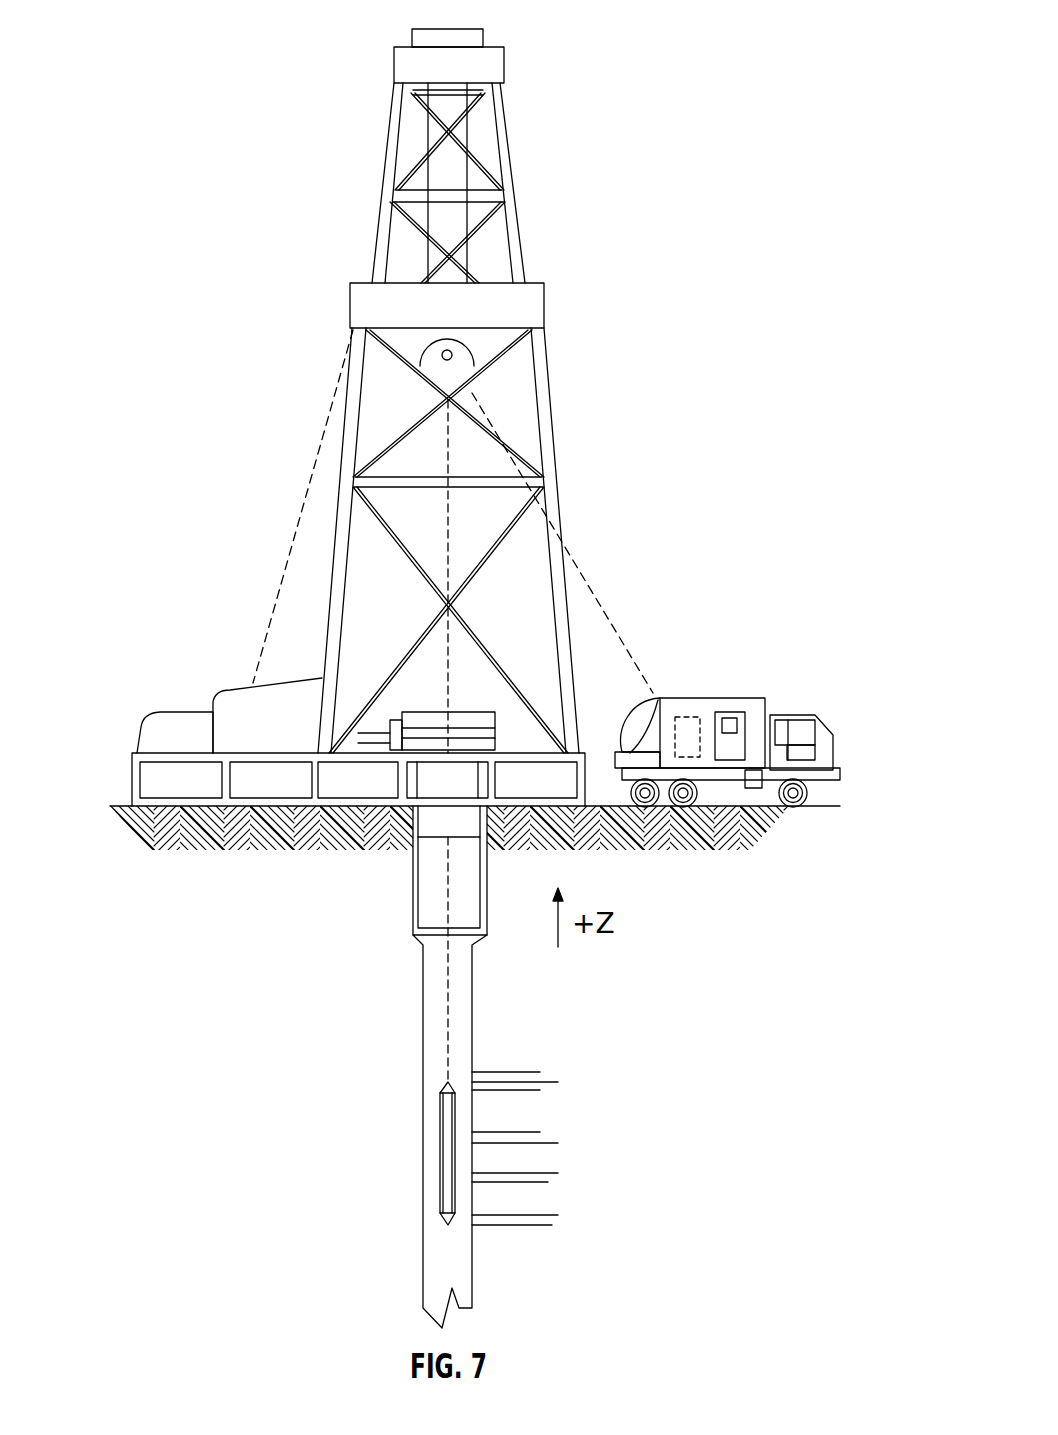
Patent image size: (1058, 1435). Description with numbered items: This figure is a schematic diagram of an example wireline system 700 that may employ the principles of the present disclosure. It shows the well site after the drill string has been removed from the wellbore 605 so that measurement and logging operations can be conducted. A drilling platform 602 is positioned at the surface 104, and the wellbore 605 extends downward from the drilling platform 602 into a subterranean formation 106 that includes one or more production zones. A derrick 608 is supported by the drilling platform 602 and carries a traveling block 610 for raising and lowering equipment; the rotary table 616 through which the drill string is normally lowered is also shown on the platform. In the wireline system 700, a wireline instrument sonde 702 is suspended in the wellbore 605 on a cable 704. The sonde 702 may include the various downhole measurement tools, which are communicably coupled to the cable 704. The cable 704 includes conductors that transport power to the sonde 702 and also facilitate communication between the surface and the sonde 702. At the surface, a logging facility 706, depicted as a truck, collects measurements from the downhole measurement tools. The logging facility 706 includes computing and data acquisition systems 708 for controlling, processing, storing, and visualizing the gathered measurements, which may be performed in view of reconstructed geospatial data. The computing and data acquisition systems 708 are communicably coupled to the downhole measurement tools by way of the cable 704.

The wireline system 700 is at (666, 32).
The derrick 608 is at (512, 157).
The traveling block 610 is at (462, 353).
The cable 704 is at (606, 614).
The rotary table 616 is at (480, 712).
The drilling platform 602 is at (132, 766).
The logging facility 706 is at (757, 698).
The computing and data acquisition systems 708 is at (688, 717).
The surface 104 is at (830, 806).
The wellbore 605 is at (471, 1030).
The wireline instrument sonde 702 is at (436, 1111).
The subterranean formation 106 is at (563, 1072).